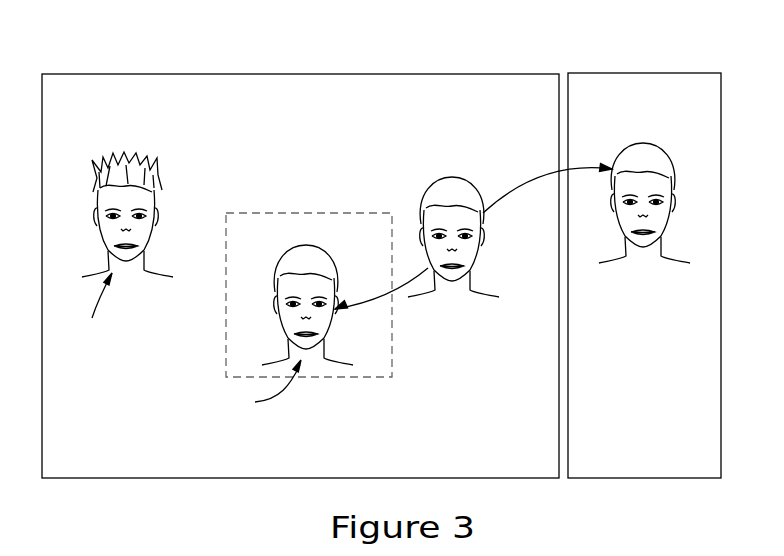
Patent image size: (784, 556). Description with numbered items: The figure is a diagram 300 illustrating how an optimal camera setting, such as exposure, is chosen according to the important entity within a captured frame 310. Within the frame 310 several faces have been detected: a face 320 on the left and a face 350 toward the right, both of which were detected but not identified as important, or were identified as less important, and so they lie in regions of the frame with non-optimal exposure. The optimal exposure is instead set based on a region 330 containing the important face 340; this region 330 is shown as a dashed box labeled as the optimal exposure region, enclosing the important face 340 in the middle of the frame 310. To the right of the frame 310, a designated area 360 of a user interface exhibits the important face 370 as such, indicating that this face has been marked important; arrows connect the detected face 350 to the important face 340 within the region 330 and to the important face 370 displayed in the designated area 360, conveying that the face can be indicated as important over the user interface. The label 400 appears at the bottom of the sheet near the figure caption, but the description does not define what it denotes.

The diagram 300 is at (75, 31).
The frame 310 is at (247, 73).
The face 320 is at (95, 195).
The region 330 is at (290, 213).
The important face 340 is at (273, 292).
The face 350 is at (422, 206).
The designated area 360 is at (629, 73).
The important face 370 is at (662, 159).
The figure reference 400 is at (75, 548).